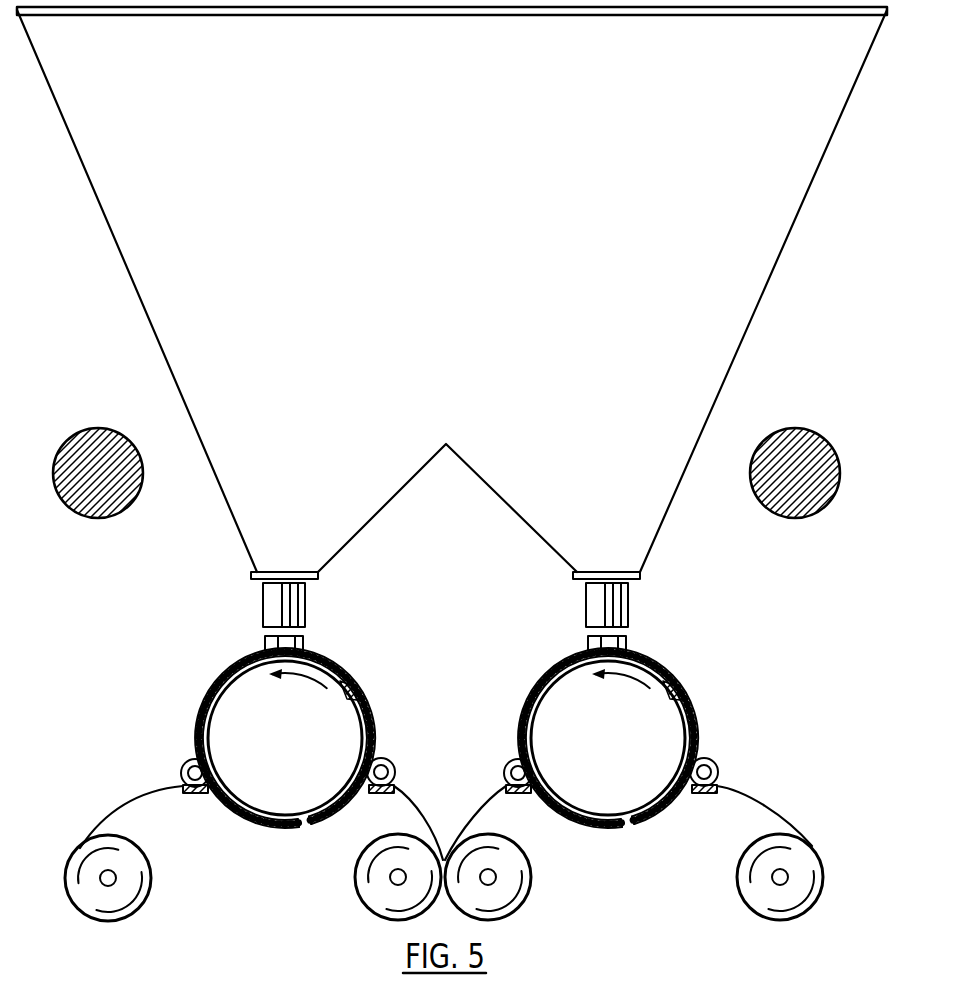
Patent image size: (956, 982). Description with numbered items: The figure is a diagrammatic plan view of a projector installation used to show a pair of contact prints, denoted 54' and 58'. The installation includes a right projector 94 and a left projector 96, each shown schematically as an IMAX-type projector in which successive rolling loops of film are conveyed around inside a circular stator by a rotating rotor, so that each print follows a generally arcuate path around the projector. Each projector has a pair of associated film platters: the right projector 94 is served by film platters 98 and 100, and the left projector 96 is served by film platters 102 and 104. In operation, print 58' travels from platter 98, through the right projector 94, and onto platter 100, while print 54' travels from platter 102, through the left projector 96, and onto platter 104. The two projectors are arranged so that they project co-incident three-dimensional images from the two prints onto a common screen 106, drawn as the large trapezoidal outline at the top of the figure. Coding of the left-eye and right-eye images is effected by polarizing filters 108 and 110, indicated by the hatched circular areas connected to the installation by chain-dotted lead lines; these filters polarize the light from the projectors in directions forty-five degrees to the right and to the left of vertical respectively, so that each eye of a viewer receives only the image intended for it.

The screen 106 is at (476, 16).
The polarizing filter 108 is at (252, 573).
The polarizing filter 110 is at (765, 505).
The left projector 96 is at (389, 711).
The right projector 94 is at (625, 705).
The contact print 54' is at (285, 738).
The contact print 58' is at (608, 738).
The film platter 98 is at (738, 856).
The film platter 100 is at (532, 862).
The film platter 102 is at (358, 862).
The film platter 104 is at (150, 863).